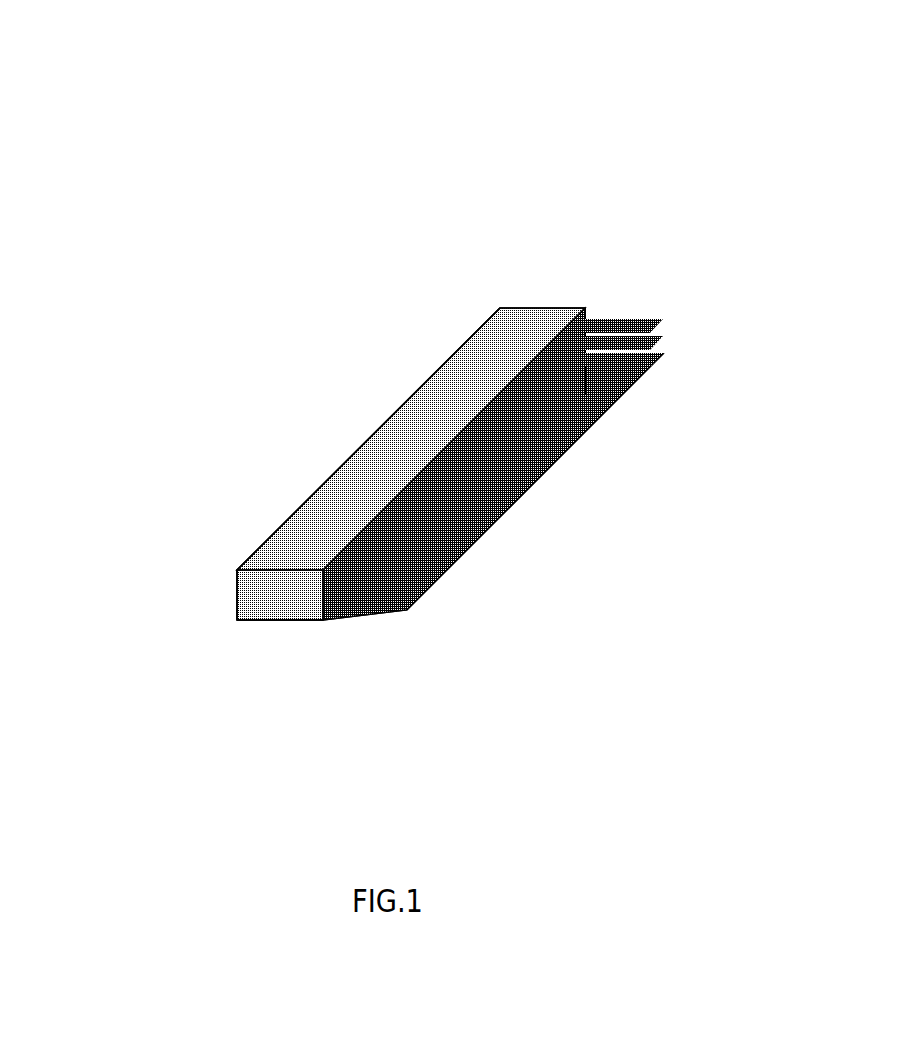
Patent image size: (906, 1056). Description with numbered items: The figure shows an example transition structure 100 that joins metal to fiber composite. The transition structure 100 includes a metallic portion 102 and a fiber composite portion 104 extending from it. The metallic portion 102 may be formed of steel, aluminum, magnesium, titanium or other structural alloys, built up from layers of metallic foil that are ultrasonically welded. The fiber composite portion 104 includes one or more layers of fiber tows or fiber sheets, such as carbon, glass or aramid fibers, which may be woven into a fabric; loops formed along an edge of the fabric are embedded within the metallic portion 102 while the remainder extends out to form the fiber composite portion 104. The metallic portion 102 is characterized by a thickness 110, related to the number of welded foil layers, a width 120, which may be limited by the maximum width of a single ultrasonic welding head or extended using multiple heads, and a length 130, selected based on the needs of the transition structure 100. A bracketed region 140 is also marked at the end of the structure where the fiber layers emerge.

The transition structure 100 is at (205, 110).
The metallic portion 102 is at (520, 308).
The fiber composite portion 104 is at (585, 422).
The thickness 110 is at (188, 596).
The width 120 is at (282, 669).
The length 130 is at (338, 410).
The fin region 140 is at (607, 272).